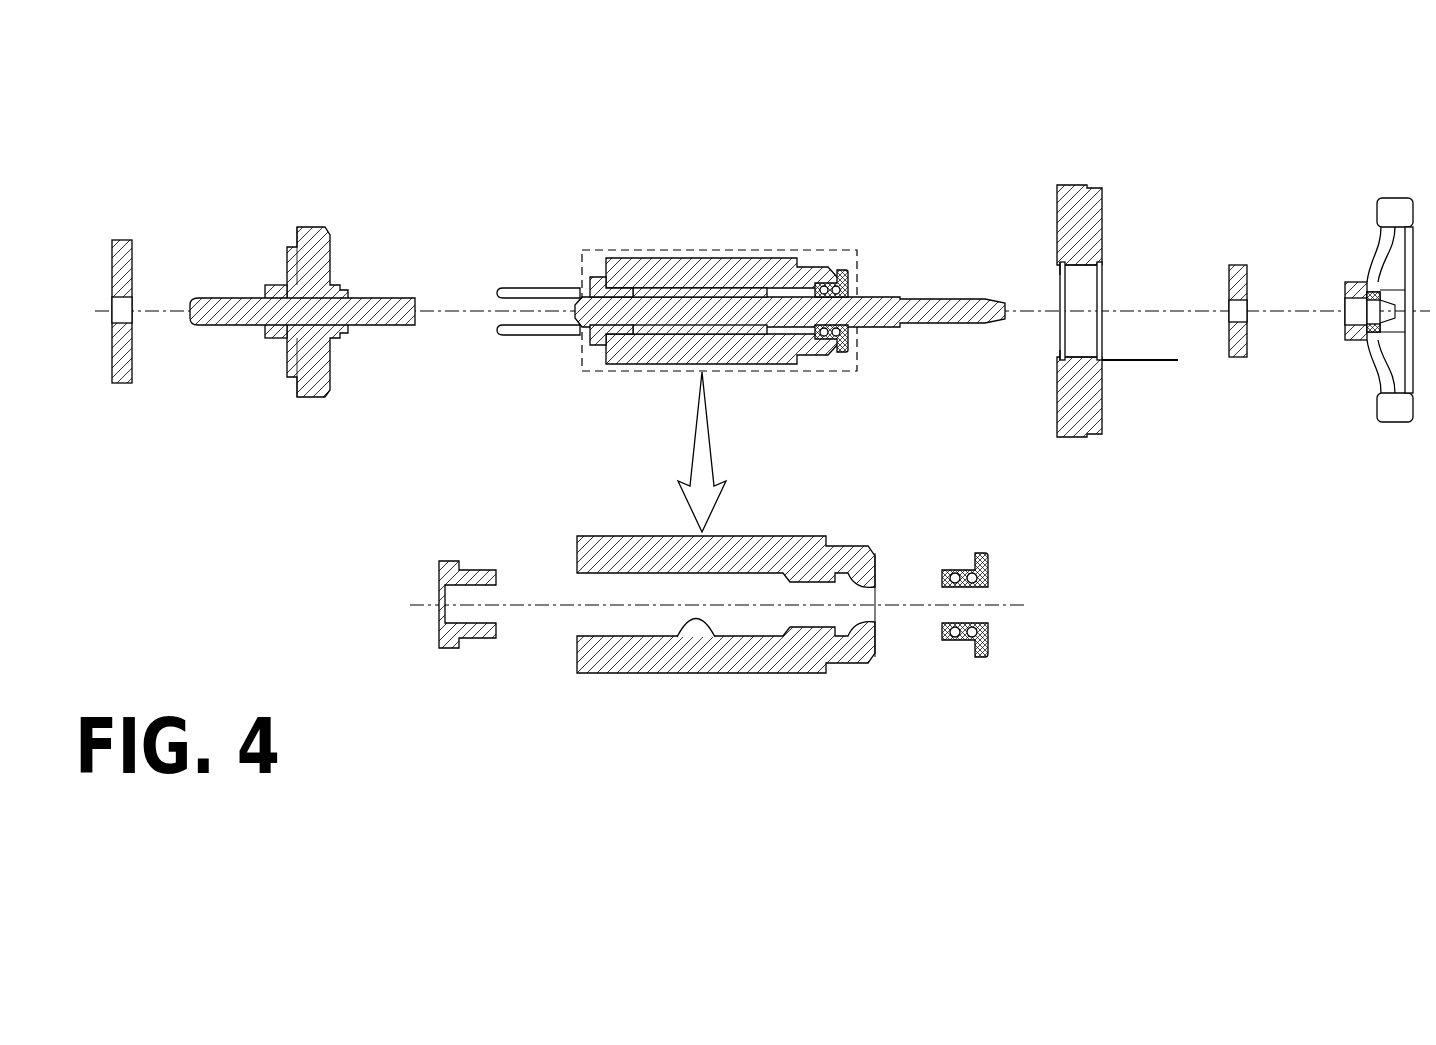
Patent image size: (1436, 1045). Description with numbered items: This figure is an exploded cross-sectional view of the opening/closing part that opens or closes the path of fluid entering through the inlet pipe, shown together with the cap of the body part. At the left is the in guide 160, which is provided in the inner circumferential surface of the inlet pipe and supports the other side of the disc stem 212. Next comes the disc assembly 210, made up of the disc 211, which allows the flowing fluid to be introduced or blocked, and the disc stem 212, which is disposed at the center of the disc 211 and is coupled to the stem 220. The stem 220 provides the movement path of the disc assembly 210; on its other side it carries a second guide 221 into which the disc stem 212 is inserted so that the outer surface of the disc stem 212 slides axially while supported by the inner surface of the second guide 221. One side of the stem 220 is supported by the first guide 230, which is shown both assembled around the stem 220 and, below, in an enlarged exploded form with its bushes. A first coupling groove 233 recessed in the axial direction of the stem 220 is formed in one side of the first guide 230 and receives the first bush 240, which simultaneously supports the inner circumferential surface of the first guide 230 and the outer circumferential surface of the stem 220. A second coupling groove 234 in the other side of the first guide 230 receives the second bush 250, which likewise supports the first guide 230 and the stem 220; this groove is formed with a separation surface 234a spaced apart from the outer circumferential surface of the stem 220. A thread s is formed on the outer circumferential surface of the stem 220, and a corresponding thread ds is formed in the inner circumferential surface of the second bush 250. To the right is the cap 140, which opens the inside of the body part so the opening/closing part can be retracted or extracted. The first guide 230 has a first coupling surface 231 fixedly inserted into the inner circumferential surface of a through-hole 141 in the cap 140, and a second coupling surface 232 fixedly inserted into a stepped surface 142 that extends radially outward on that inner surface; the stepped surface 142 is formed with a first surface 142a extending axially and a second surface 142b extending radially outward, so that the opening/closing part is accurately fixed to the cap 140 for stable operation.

The cap 140 is at (1095, 212).
The through-hole 141 is at (1082, 268).
The stepped surface 142 is at (1020, 130).
The first surface 142a is at (1057, 360).
The second surface 142b is at (1058, 262).
The in guide 160 is at (121, 240).
The disc assembly 210 is at (348, 143).
The disc 211 is at (321, 227).
The disc stem 212 is at (238, 298).
The stem 220 is at (715, 305).
The second guide 221 is at (531, 288).
The first guide 230 is at (808, 536).
The first coupling surface 231 is at (832, 270).
The second coupling surface 232 is at (800, 263).
The first coupling groove 233 is at (877, 583).
The second coupling groove 234 is at (597, 636).
The separation surface 234a is at (696, 620).
The first bush 240 is at (850, 338).
The second bush 250 is at (590, 277).
The thread s is at (592, 340).
The corresponding thread ds is at (439, 604).